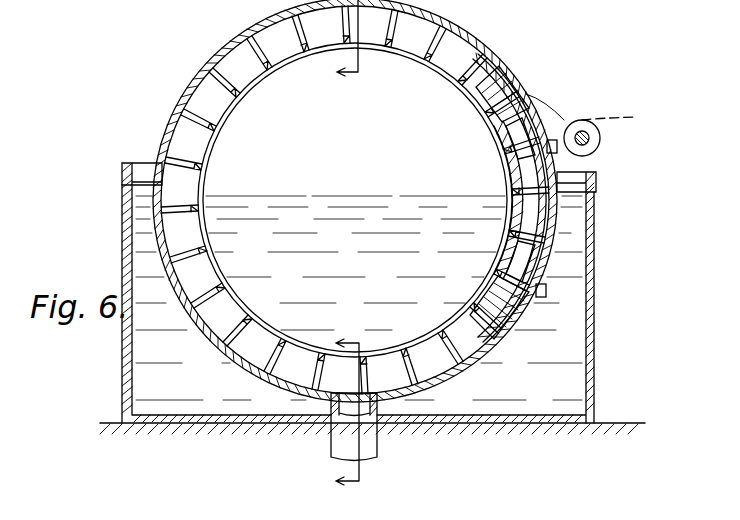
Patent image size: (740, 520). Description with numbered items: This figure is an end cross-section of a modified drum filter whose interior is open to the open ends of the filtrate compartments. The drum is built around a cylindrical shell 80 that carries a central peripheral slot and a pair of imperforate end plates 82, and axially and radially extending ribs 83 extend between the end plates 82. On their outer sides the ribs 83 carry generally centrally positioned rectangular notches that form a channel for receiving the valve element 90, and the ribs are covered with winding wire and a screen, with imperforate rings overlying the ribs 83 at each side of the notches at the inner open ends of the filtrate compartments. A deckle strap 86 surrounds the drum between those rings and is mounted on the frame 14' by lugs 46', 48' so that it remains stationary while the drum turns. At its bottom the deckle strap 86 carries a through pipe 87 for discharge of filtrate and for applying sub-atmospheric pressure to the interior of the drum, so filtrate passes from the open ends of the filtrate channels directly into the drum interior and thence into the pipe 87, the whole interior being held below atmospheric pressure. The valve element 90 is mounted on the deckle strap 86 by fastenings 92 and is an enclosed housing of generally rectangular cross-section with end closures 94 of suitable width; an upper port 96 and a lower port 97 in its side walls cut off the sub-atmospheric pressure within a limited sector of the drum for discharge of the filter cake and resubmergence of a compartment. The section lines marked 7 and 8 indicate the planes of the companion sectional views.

The frame 14' is at (330, 301).
The lug 46' is at (140, 148).
The lug 48' is at (605, 182).
The cylindrical shell 80 is at (207, 150).
The imperforate end plates 82 is at (374, 168).
The ribs 83 is at (283, 352).
The deckle strap 86 is at (473, 365).
The through pipe 87 is at (372, 443).
The valve element 90 is at (556, 233).
The fastenings 92 is at (550, 141).
The end closures 94 is at (501, 74).
The upper port 96 is at (515, 266).
The lower port 97 is at (520, 146).
The section line 7 is at (363, 50).
The section line 8 is at (355, 410).